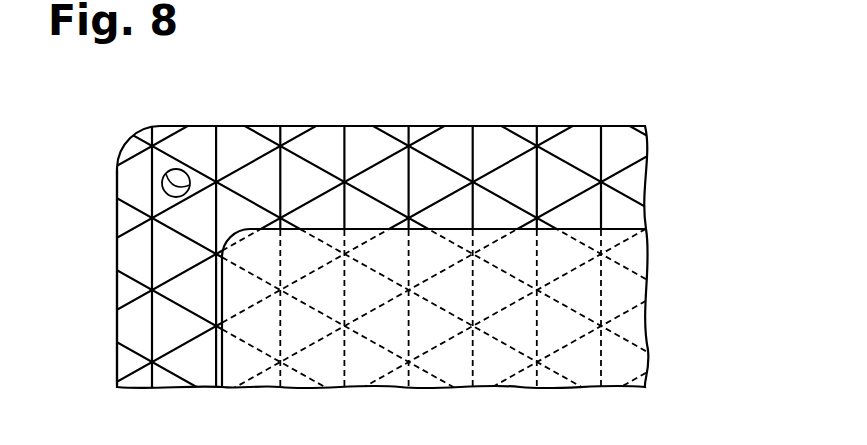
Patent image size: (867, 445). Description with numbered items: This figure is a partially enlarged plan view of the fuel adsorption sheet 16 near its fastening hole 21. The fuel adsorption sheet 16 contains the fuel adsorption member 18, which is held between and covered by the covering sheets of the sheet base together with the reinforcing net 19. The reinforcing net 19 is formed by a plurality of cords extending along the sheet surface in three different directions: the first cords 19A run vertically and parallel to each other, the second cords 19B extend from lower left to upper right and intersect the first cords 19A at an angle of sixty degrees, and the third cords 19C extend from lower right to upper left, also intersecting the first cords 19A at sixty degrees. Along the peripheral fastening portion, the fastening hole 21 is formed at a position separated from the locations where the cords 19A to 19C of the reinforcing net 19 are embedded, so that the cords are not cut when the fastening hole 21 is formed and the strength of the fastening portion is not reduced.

The fuel adsorption sheet 16 is at (258, 126).
The fuel adsorption member 18 is at (330, 372).
The reinforcing net 19 is at (346, 143).
The first cords 19A is at (433, 159).
The second cords 19B is at (627, 166).
The third cords 19C is at (129, 272).
The fastening holes 21 is at (170, 170).